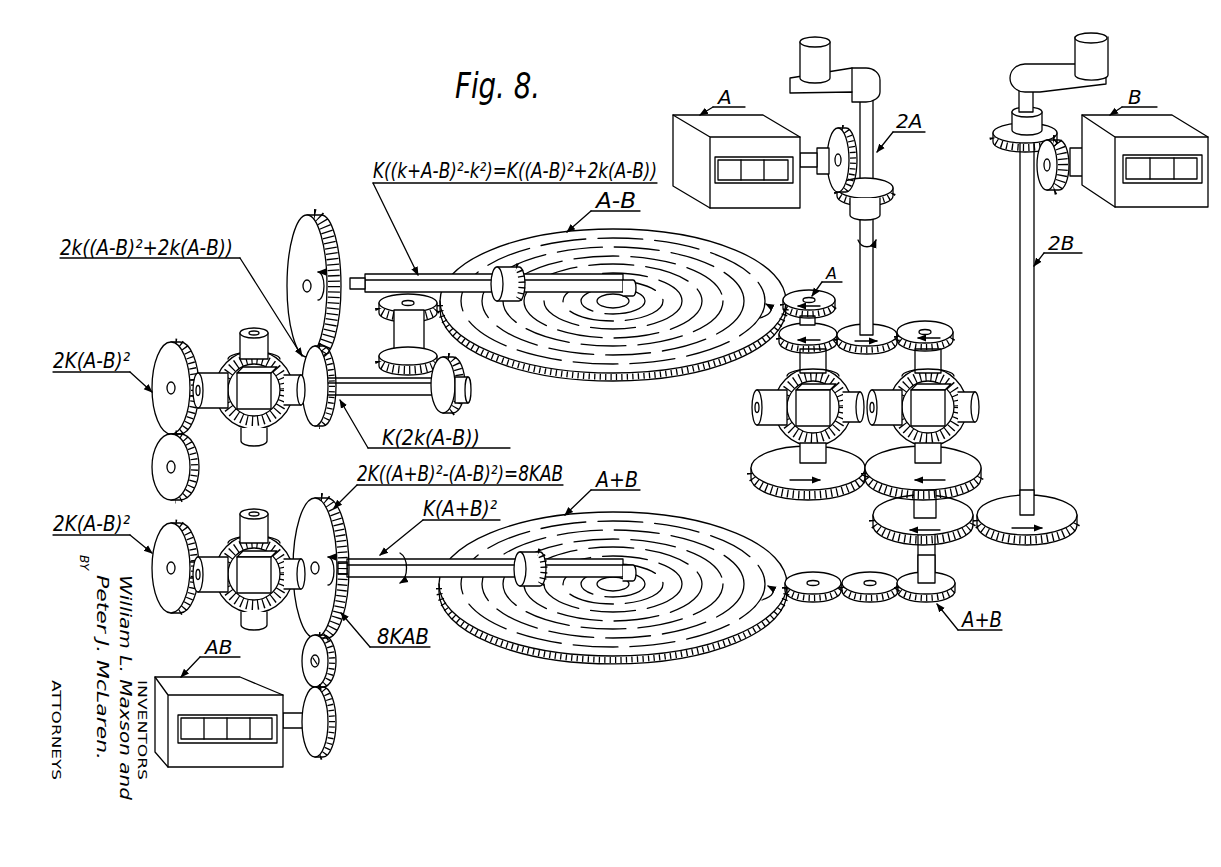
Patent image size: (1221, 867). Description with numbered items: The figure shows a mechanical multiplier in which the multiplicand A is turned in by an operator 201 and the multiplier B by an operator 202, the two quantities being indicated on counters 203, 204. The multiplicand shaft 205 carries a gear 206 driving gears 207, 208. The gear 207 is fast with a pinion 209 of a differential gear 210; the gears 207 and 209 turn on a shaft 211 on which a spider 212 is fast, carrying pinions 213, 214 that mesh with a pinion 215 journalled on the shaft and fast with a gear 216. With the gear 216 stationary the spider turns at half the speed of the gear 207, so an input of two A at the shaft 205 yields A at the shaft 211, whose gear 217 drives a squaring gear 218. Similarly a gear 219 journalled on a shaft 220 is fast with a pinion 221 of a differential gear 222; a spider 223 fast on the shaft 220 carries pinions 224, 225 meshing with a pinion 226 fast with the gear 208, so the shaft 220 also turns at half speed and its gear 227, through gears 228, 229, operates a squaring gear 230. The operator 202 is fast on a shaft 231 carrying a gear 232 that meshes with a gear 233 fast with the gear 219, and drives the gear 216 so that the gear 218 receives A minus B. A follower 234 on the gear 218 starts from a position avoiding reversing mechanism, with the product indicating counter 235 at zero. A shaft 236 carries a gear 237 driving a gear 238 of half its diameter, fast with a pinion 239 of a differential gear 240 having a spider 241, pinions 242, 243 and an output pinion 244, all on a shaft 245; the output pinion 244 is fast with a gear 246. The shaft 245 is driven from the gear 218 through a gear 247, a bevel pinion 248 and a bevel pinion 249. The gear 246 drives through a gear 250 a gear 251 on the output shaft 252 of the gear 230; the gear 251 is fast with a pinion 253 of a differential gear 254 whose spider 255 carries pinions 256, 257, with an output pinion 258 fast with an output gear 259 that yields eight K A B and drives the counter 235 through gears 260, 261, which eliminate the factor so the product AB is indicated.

The operator 201 is at (840, 72).
The operator 202 is at (1055, 67).
The counter 203 is at (690, 185).
The counter 204 is at (1168, 205).
The multiplicand shaft 205 is at (874, 238).
The gear 206 is at (880, 323).
The gear 207 is at (782, 340).
The gear 208 is at (928, 320).
The pinion 209 is at (785, 365).
The differential gear 210 is at (794, 412).
The shaft 211 is at (818, 322).
The spider 212 is at (816, 405).
The pinion 213 is at (755, 407).
The pinion 214 is at (864, 421).
The pinion 215 is at (809, 422).
The gear 216 is at (825, 498).
The gear 217 is at (800, 290).
The squaring gear 218 is at (738, 262).
The gear 219 is at (975, 460).
The shaft 220 is at (932, 553).
The pinion 221 is at (923, 420).
The differential gear 222 is at (942, 401).
The spider 223 is at (931, 405).
The pinion 224 is at (881, 391).
The pinion 225 is at (990, 413).
The pinion 226 is at (952, 353).
The gear 227 is at (955, 583).
The gear 228 is at (860, 572).
The gear 229 is at (805, 572).
The squaring gear 230 is at (738, 545).
The shaft 231 is at (1034, 318).
The gear 232 is at (1050, 500).
The gear 233 is at (965, 500).
The follower 234 is at (503, 272).
The product indicating counter 235 is at (235, 762).
The shaft 236 is at (355, 278).
The gear 237 is at (300, 240).
The gear 238 is at (301, 411).
The pinion 239 is at (298, 354).
The differential gear 240 is at (254, 375).
The spider 241 is at (257, 388).
The pinion 242 is at (235, 339).
The pinion 243 is at (249, 409).
The output pinion 244 is at (210, 410).
The shaft 245 is at (350, 380).
The gear 246 is at (165, 352).
The gear 247 is at (390, 312).
The bevel pinion 248 is at (432, 360).
The bevel pinion 249 is at (455, 408).
The gear 250 is at (157, 465).
The gear 251 is at (166, 605).
The output shaft 252 is at (358, 578).
The pinion 253 is at (209, 586).
The differential gear 254 is at (247, 552).
The spider 255 is at (257, 572).
The pinion 256 is at (240, 522).
The pinion 257 is at (256, 587).
The output pinion 258 is at (292, 552).
The output gear 259 is at (300, 640).
The gear 260 is at (310, 666).
The gear 261 is at (316, 750).